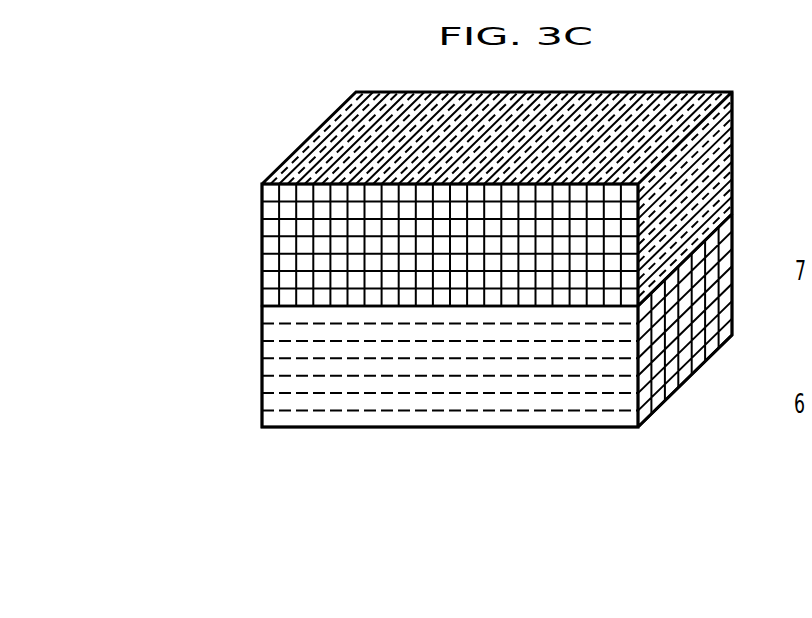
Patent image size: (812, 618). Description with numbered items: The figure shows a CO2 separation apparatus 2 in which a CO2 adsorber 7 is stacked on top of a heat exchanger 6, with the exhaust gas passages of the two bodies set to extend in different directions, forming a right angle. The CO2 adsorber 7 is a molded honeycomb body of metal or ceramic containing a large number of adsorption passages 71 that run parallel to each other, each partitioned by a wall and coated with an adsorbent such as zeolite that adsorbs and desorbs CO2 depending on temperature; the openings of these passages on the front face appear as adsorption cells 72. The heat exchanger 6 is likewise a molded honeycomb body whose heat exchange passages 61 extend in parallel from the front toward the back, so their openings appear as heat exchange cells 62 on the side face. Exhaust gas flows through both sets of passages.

The CO2 separation apparatus 2 is at (278, 122).
The CO2 adsorber 7 is at (436, 182).
The adsorption passage 71 is at (420, 127).
The adsorption cell 72 is at (323, 262).
The heat exchanger 6 is at (446, 320).
The heat exchange passage 61 is at (280, 377).
The heat exchange cell 62 is at (685, 340).